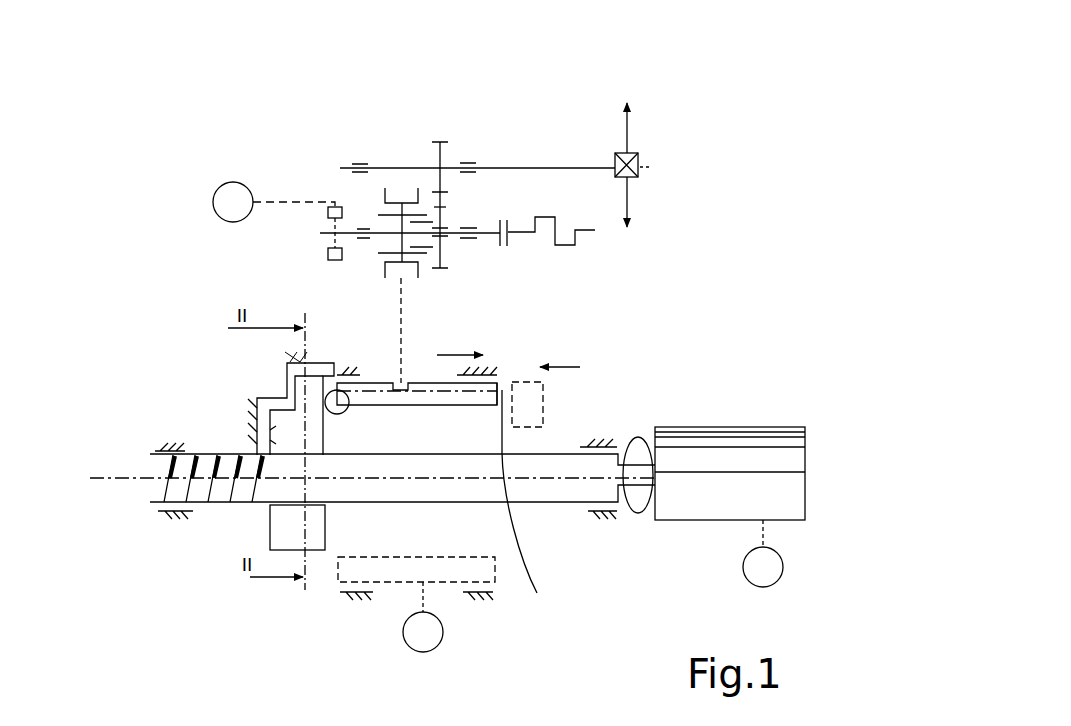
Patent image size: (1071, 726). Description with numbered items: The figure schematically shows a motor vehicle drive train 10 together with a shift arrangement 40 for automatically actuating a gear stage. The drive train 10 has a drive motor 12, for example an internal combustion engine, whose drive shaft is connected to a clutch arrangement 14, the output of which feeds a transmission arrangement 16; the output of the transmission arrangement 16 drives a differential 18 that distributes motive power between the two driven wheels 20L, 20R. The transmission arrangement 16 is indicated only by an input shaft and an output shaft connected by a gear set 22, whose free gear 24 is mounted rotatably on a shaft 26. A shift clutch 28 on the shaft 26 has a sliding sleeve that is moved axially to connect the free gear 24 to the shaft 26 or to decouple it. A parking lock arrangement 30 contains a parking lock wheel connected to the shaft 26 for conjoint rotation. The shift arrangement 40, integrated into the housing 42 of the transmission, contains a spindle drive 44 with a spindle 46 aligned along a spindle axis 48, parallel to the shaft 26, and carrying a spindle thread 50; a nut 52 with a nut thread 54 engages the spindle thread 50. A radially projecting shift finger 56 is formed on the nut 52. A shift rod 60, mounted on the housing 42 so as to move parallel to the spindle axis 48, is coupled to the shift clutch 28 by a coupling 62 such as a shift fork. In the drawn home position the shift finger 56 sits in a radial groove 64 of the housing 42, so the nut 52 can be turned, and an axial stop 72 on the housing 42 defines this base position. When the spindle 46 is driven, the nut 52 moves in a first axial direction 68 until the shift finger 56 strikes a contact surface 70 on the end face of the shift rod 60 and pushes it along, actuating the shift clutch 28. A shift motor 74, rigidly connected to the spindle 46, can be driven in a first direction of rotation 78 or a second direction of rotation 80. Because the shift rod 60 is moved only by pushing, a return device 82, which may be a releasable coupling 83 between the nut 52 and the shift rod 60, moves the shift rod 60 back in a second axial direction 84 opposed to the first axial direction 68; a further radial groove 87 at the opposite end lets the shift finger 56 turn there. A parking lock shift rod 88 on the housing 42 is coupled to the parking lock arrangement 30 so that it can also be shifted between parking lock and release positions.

The drive train 10 is at (746, 156).
The drive motor 12 is at (575, 232).
The clutch arrangement 14 is at (512, 243).
The transmission arrangement 16 is at (470, 135).
The differential 18 is at (639, 158).
The driven wheel 20R is at (630, 133).
The driven wheel 20L is at (629, 200).
The gear set 22 is at (439, 128).
The free gear 24 is at (443, 208).
The shaft 26 is at (494, 237).
The shift clutch 28 is at (405, 182).
The parking lock arrangement 30 is at (323, 192).
The shift arrangement 40 is at (237, 293).
The housing 42 is at (275, 392).
The spindle drive 44 is at (177, 407).
The spindle 46 is at (553, 487).
The spindle axis 48 is at (551, 477).
The spindle thread 50 is at (173, 471).
The nut 52 is at (270, 538).
The nut thread 54 is at (290, 498).
The shift finger 56 is at (283, 380).
The shift rod 60 is at (500, 382).
The coupling 62 is at (403, 328).
The radial groove 64 is at (318, 366).
The first axial direction 68 is at (457, 350).
The contact surface 70 is at (337, 362).
The axial stop 72 is at (277, 442).
The shift motor 74 is at (736, 450).
The first direction of rotation 78 is at (638, 514).
The second direction of rotation 80 is at (647, 449).
The return device 82 is at (545, 407).
The releasable coupling 83 is at (336, 411).
The second axial direction 84 is at (580, 367).
The further radial groove 87 is at (533, 496).
The parking lock shift rod 88 is at (393, 573).